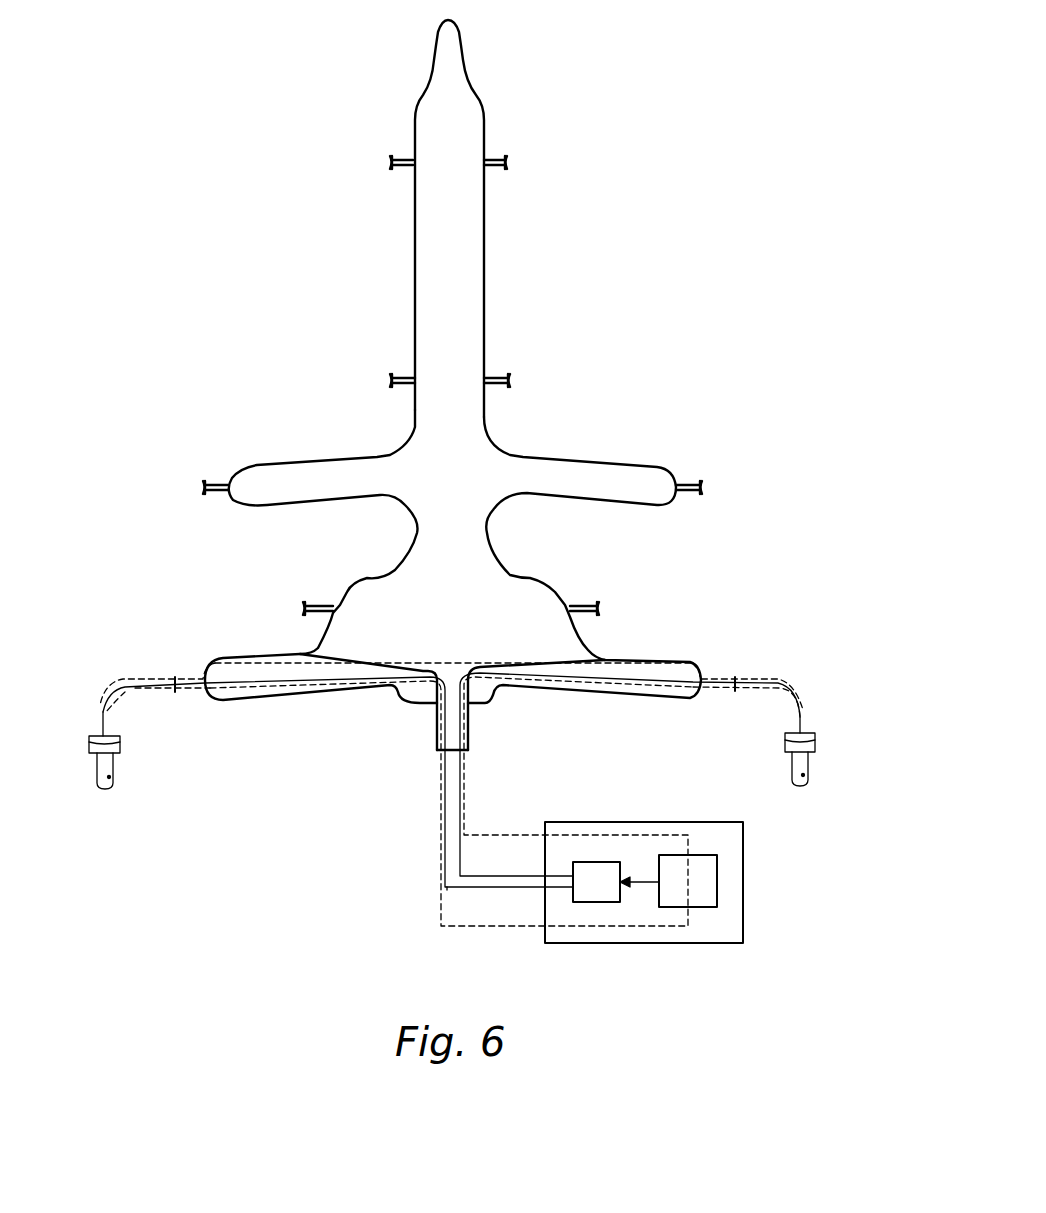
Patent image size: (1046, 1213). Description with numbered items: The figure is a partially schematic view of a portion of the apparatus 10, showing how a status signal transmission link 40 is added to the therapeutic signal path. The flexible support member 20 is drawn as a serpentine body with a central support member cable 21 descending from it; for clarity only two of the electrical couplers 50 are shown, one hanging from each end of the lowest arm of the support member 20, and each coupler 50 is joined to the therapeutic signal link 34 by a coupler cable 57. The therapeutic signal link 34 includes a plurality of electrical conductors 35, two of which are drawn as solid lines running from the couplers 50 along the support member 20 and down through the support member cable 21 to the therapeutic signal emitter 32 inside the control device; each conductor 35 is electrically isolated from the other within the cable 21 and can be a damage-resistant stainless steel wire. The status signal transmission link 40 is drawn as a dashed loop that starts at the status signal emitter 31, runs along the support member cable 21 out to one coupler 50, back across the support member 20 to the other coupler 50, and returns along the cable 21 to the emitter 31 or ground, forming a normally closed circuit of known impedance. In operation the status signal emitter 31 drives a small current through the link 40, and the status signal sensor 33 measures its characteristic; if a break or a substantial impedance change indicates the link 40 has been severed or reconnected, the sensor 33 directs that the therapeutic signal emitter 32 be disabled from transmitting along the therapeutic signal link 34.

The apparatus 10 is at (466, 402).
The support member 20 is at (484, 260).
The support member cable 21 is at (440, 752).
The status signal emitter 31 is at (672, 858).
The therapeutic signal emitter 32 is at (597, 902).
The status signal sensor 33 is at (662, 887).
The therapeutic signal transmission link 34 is at (483, 895).
The electrical conductor 35 is at (150, 683).
The status signal transmission link 40 is at (122, 681).
The electrical coupler 50 is at (122, 752).
The coupler cable 57 is at (180, 680).